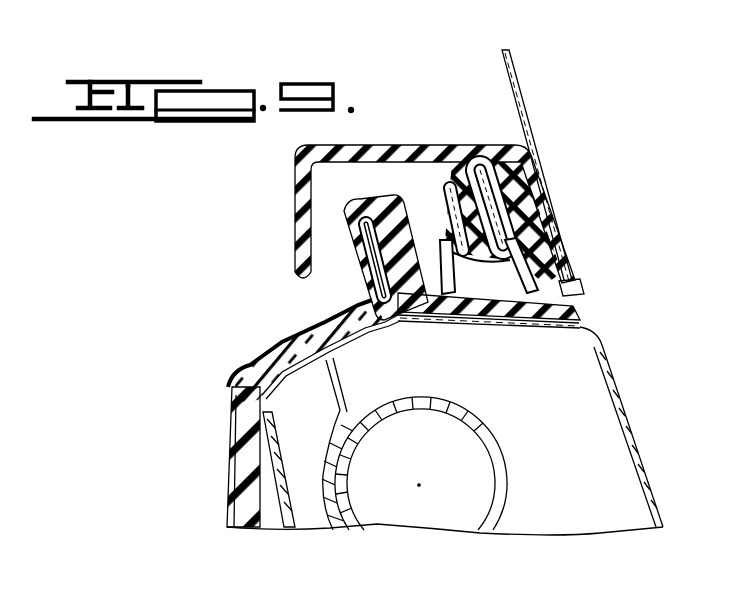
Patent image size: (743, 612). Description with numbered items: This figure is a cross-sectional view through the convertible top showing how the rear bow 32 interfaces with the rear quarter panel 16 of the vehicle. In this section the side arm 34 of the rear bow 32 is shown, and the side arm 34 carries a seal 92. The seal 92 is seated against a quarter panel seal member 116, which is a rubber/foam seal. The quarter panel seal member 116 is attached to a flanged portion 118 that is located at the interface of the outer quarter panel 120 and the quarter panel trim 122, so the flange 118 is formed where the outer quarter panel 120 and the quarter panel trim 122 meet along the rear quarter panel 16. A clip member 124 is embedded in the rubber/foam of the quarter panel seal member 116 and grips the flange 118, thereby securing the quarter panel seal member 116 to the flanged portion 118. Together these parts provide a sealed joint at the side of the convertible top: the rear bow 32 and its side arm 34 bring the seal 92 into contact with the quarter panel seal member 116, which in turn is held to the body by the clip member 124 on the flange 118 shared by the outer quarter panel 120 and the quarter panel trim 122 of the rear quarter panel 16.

The rear bow 32 is at (386, 150).
The side arm 34 is at (427, 152).
The rear bow seal 92 is at (455, 262).
The clip member 124 is at (363, 267).
The flanged portion 118 is at (372, 296).
The quarter panel trim 122 is at (250, 420).
The quarter panel seal member 116 is at (578, 318).
The rear quarter panel 16 is at (620, 383).
The outer quarter panel 120 is at (647, 453).